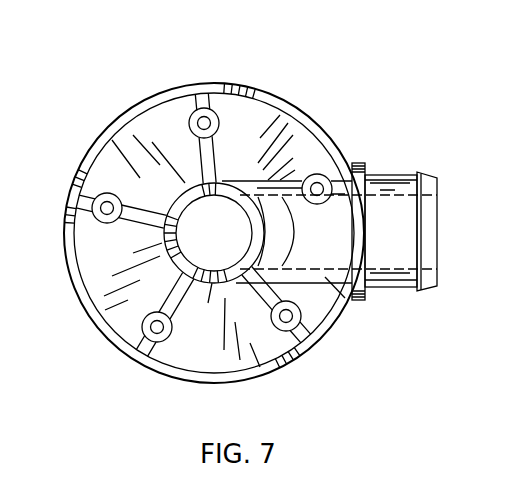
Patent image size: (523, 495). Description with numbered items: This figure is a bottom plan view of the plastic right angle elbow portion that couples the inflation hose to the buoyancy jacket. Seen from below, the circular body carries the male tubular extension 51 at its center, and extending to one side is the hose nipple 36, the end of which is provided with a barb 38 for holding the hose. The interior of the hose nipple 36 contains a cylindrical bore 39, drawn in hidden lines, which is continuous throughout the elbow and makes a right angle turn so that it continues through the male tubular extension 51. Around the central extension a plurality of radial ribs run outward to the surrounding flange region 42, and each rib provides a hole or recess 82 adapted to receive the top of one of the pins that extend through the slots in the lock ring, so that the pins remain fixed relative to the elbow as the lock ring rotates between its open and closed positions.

The mounting flange plate 42 is at (270, 103).
The male tubular extension 51 is at (175, 253).
The hole or recess 82 is at (150, 327).
The hose nipple 36 is at (382, 288).
The barb 38 is at (418, 173).
The cylindrical bore 39 is at (408, 197).